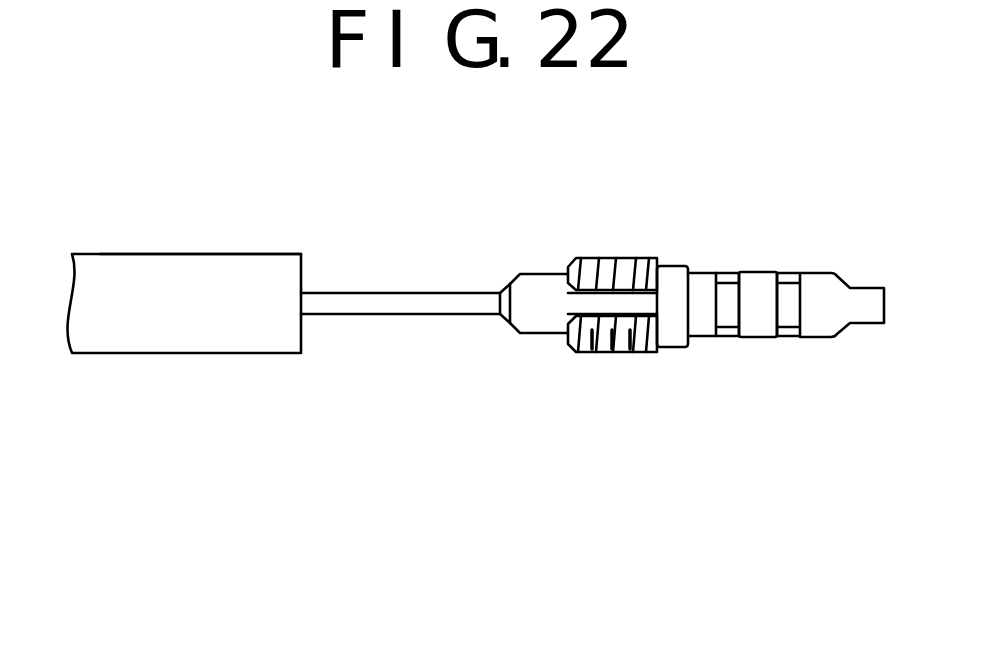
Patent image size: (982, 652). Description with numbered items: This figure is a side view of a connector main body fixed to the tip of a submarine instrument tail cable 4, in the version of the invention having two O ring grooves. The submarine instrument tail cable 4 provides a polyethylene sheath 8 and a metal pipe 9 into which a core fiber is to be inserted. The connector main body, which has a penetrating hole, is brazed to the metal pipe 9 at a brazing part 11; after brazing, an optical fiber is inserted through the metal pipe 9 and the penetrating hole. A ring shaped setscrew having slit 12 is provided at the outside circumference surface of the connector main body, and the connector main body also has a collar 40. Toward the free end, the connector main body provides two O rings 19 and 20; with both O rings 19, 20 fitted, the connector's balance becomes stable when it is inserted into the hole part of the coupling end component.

The submarine instrument tail cable 4 is at (185, 253).
The polyethylene sheath 8 is at (172, 338).
The metal pipe 9 is at (390, 299).
The brazing part 11 is at (507, 324).
The ring shaped setscrew having slit 12 is at (613, 263).
The O ring 19 is at (728, 279).
The O ring 20 is at (788, 281).
The collar 40 is at (670, 345).